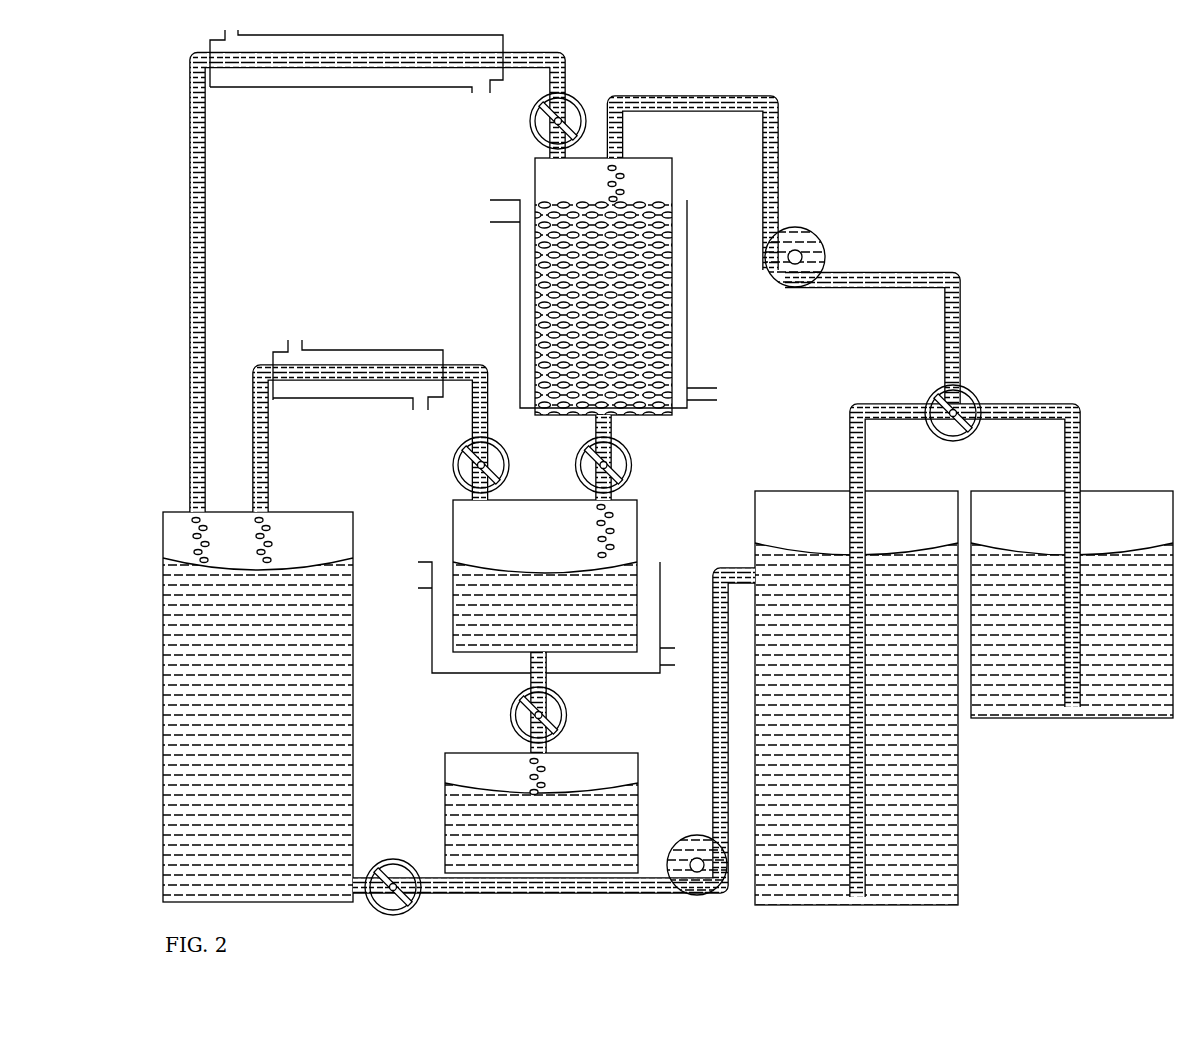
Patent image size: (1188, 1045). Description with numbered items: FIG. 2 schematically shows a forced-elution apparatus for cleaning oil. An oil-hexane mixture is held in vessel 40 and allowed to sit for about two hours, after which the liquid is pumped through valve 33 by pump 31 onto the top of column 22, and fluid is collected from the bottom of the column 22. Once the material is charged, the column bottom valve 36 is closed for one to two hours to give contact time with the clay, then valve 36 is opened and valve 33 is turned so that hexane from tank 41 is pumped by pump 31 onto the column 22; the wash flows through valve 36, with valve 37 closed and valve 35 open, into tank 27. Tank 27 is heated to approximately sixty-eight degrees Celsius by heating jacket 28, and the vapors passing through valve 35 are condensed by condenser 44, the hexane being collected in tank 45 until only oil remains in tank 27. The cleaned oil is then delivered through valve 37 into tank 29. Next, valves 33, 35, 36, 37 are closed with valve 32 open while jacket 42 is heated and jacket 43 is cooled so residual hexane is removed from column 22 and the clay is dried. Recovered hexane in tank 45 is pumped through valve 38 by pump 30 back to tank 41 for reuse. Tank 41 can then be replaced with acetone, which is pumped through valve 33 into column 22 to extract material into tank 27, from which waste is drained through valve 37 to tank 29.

The column 22 is at (535, 190).
The tank 27 is at (638, 528).
The heating jacket 28 is at (445, 673).
The tank 29 is at (600, 752).
The pump 30 is at (697, 836).
The pump 31 is at (818, 233).
The valve 32 is at (580, 100).
The valve 33 is at (973, 392).
The valve 35 is at (454, 465).
The valve 36 is at (631, 465).
The valve 37 is at (512, 715).
The valve 38 is at (395, 858).
The vessel 40 is at (1113, 490).
The tank 41 is at (958, 815).
The jacket 42 is at (520, 296).
The jacket 43 is at (323, 85).
The condenser 44 is at (382, 350).
The tank 45 is at (310, 512).